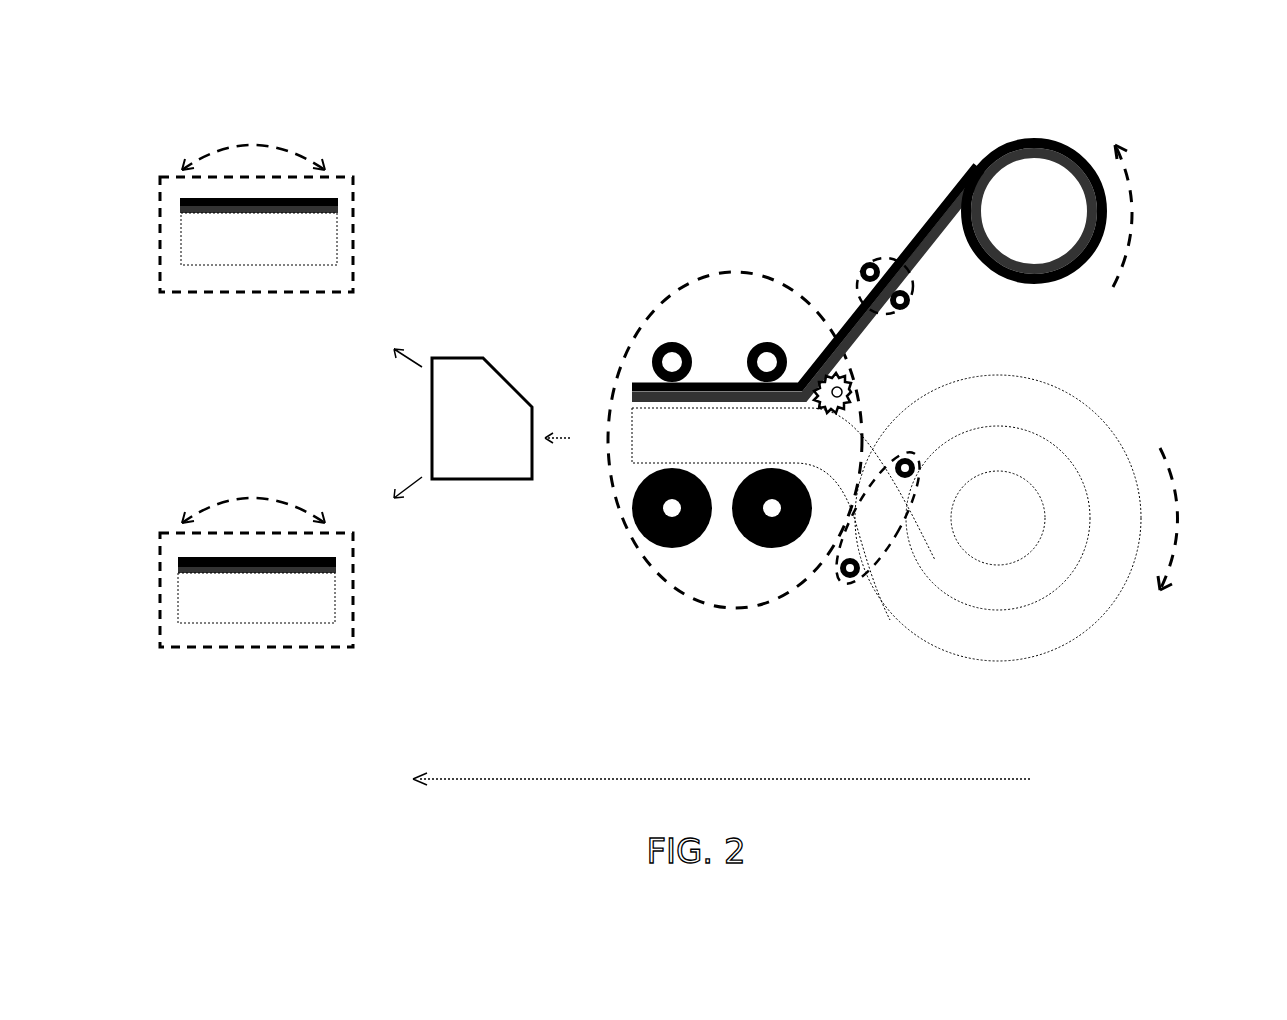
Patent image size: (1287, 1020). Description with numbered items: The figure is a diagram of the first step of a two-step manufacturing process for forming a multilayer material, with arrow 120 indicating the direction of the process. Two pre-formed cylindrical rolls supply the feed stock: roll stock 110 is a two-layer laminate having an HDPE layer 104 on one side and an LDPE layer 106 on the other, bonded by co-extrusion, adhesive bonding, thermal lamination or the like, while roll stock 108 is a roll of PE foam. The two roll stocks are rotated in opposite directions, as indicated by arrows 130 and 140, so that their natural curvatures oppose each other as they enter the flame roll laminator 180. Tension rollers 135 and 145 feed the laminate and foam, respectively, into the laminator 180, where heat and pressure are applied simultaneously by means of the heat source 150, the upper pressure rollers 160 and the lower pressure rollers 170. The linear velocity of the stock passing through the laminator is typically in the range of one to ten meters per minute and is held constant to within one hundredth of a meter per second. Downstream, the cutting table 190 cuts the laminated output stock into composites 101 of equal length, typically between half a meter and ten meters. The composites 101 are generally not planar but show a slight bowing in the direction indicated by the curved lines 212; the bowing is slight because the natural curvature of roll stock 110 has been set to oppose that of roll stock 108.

The composite 101 is at (245, 292).
The curved lines 212 is at (292, 147).
The cutting table 190 is at (503, 372).
The flame roll laminator 180 is at (752, 268).
The HDPE layer 104 is at (932, 212).
The upper pressure rollers 160 is at (672, 340).
The lower pressure rollers 170 is at (660, 548).
The heat source 150 is at (851, 388).
The tension roller 135 is at (878, 260).
The LDPE layer 106 is at (925, 252).
The roll stock 110 is at (1033, 202).
The arrow 130 is at (1137, 222).
The roll stock 108 is at (1000, 535).
The arrow 140 is at (1182, 512).
The tension roller 145 is at (850, 590).
The arrow 120 is at (742, 775).